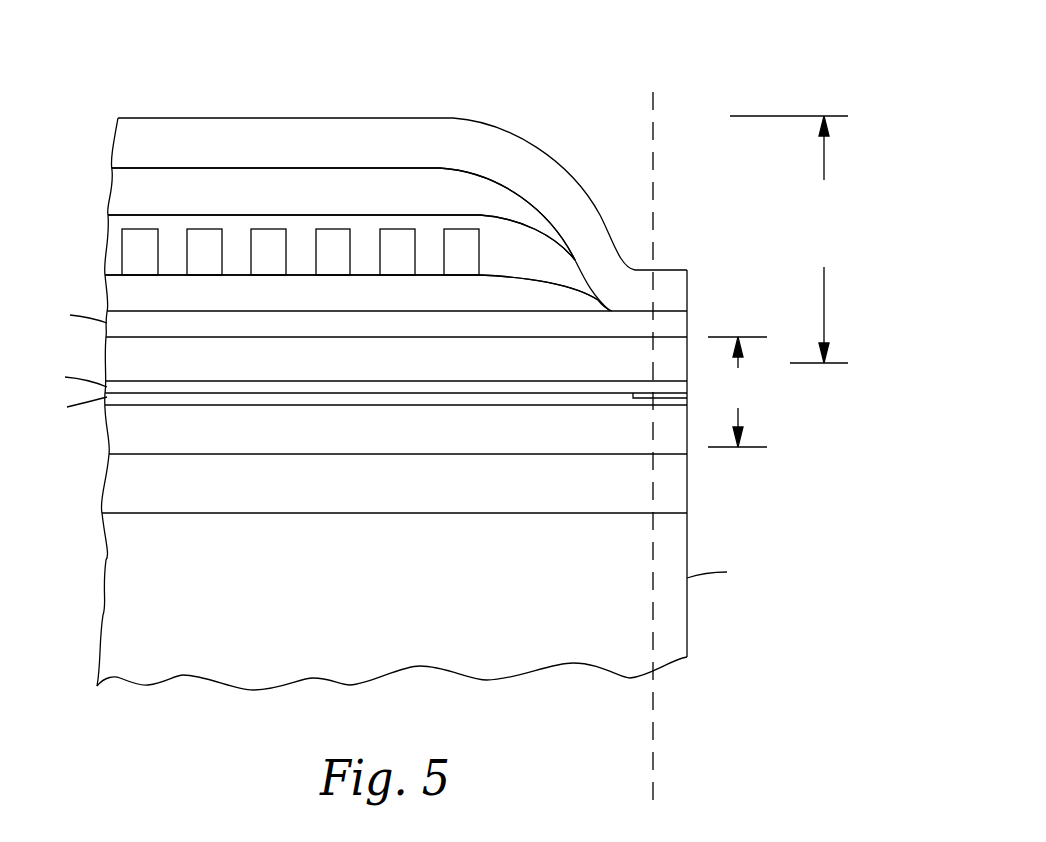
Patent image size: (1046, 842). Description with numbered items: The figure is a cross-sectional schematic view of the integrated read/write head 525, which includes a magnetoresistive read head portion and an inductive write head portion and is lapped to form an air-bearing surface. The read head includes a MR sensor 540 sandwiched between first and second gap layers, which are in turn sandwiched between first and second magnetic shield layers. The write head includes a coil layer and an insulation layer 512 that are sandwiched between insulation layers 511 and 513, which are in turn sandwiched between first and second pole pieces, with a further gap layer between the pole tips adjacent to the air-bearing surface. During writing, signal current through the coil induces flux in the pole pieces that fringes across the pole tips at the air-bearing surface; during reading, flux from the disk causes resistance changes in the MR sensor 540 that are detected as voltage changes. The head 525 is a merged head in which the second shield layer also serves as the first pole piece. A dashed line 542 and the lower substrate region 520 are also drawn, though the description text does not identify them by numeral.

The integrated read/write head 525 is at (388, 85).
The insulation layer 511 is at (368, 196).
The insulation layer 512 is at (533, 253).
The insulation layer 513 is at (361, 296).
The MR sensor 540 is at (633, 396).
The lapping line / cut plane 542 is at (653, 190).
The substrate 520 is at (110, 613).